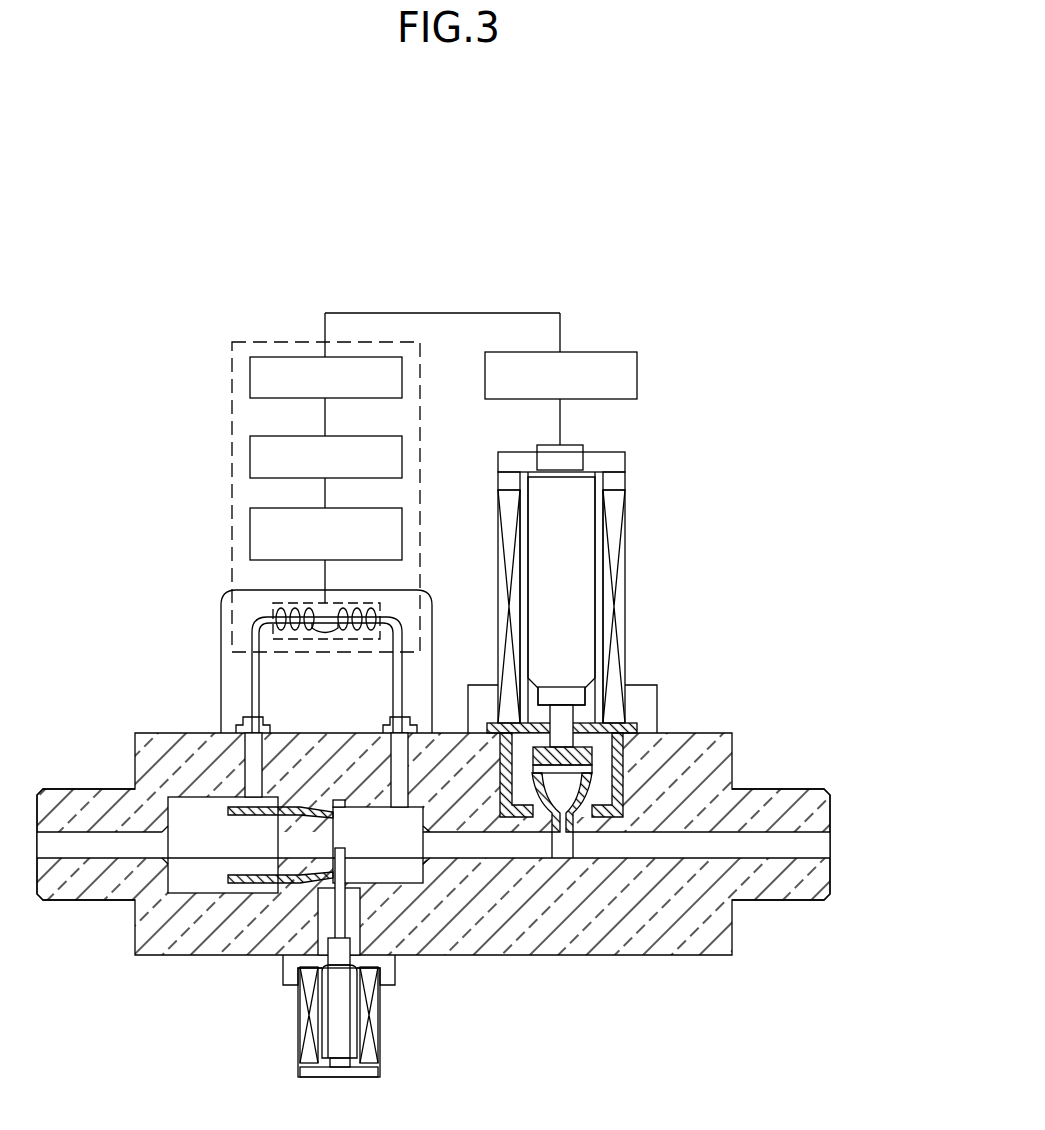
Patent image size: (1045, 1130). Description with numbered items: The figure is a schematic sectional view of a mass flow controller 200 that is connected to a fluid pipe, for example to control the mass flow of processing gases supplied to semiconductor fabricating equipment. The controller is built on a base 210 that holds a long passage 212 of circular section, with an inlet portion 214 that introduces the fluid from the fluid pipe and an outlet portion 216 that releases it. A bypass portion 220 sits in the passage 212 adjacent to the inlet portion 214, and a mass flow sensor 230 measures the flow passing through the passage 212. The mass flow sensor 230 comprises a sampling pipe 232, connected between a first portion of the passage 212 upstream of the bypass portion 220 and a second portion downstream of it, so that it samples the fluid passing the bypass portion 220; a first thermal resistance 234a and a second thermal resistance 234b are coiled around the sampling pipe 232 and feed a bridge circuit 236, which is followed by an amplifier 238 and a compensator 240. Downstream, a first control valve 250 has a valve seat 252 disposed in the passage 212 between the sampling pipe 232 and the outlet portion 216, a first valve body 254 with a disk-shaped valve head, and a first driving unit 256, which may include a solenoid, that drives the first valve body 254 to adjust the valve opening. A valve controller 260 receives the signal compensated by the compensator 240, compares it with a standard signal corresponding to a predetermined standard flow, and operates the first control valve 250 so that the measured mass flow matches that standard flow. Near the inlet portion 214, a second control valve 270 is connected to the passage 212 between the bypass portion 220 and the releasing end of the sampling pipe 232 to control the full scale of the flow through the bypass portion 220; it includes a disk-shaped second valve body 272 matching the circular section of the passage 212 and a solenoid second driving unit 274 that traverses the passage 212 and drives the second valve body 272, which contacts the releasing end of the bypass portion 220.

The mass flow controller 200 is at (740, 462).
The base 210 is at (722, 752).
The passage 212 is at (490, 850).
The inlet portion 214 is at (98, 893).
The outlet portion 216 is at (767, 893).
The bypass portion 220 is at (249, 884).
The mass flow sensor 230 is at (222, 486).
The sampling pipe 232 is at (253, 675).
The first thermal resistance 234a is at (273, 607).
The second thermal resistance 234b is at (357, 619).
The bridge circuit 236 is at (250, 537).
The amplifier 238 is at (250, 447).
The compensator 240 is at (250, 373).
The first control valve 250 is at (640, 568).
The valve seat 252 is at (592, 780).
The first valve body 254 is at (583, 742).
The first driving unit 256 is at (618, 600).
The valve controller 260 is at (637, 378).
The second control valve 270 is at (290, 1031).
The second valve body 272 is at (342, 868).
The second driving unit 274 is at (370, 1053).